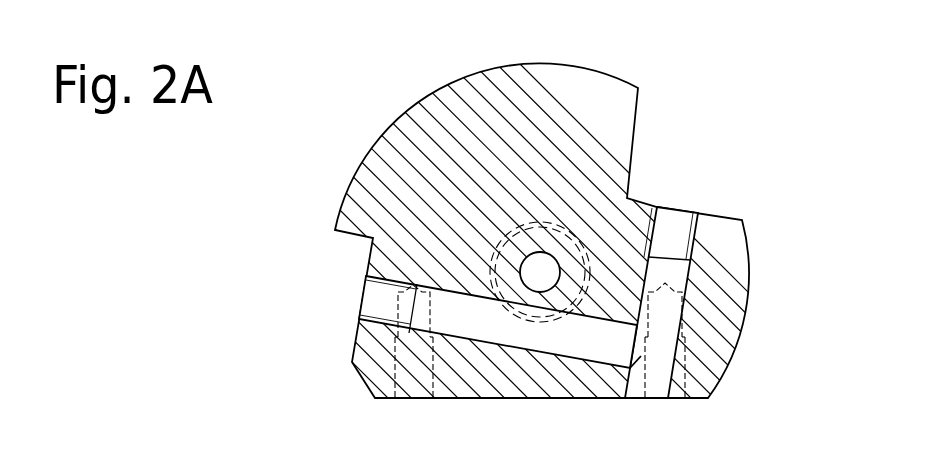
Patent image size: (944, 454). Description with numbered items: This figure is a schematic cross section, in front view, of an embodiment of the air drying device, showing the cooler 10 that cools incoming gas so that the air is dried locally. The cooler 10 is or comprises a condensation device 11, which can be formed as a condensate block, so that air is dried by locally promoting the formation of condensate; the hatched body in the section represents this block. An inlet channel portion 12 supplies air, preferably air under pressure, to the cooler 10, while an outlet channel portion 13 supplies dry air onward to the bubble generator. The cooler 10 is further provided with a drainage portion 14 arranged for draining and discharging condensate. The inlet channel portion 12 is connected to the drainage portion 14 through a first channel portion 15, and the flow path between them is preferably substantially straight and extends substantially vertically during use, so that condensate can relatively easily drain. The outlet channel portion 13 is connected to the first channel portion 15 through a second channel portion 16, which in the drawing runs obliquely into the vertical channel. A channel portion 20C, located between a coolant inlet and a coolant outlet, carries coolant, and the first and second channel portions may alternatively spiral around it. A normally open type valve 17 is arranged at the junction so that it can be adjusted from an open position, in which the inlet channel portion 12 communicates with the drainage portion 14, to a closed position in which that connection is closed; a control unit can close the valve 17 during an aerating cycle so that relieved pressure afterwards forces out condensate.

The cooler 10 is at (682, 101).
The condensation device 11 is at (450, 147).
The inlet channel portion 12 is at (677, 233).
The outlet channel portion 13 is at (378, 302).
The drainage portion 14 is at (647, 397).
The first channel portion 15 is at (675, 275).
The second channel portion 16 is at (483, 325).
The normally open type valve 17 is at (630, 348).
The channel portion 20C is at (535, 274).